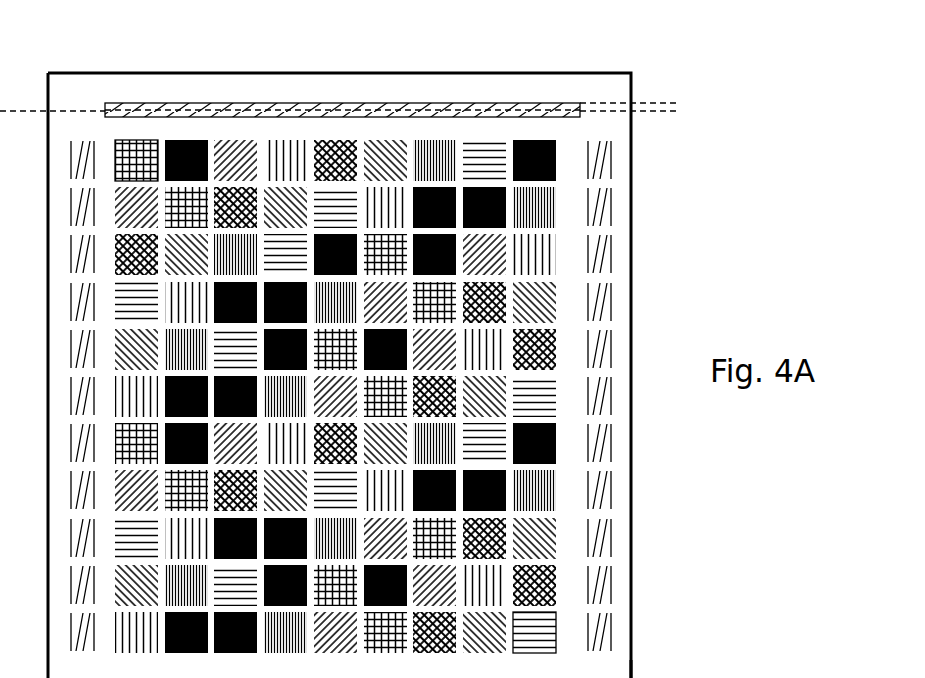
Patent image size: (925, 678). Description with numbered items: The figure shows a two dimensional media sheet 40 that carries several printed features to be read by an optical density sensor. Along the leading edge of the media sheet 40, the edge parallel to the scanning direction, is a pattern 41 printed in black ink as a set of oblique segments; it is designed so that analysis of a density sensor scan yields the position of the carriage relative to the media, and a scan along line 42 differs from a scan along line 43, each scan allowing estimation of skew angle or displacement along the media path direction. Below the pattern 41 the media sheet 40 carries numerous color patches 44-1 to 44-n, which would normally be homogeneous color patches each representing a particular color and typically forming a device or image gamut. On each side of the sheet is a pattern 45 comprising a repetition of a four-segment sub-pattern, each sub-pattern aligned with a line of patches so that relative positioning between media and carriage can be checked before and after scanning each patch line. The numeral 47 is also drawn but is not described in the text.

The media sheet 40 is at (633, 170).
The pattern 41 is at (570, 118).
The scan line 42 is at (678, 103).
The scan line 43 is at (678, 111).
The color patch 44-1 is at (142, 147).
The color patch 44-n is at (555, 630).
The pattern 45 is at (612, 227).
The lower edge region 47 is at (680, 669).